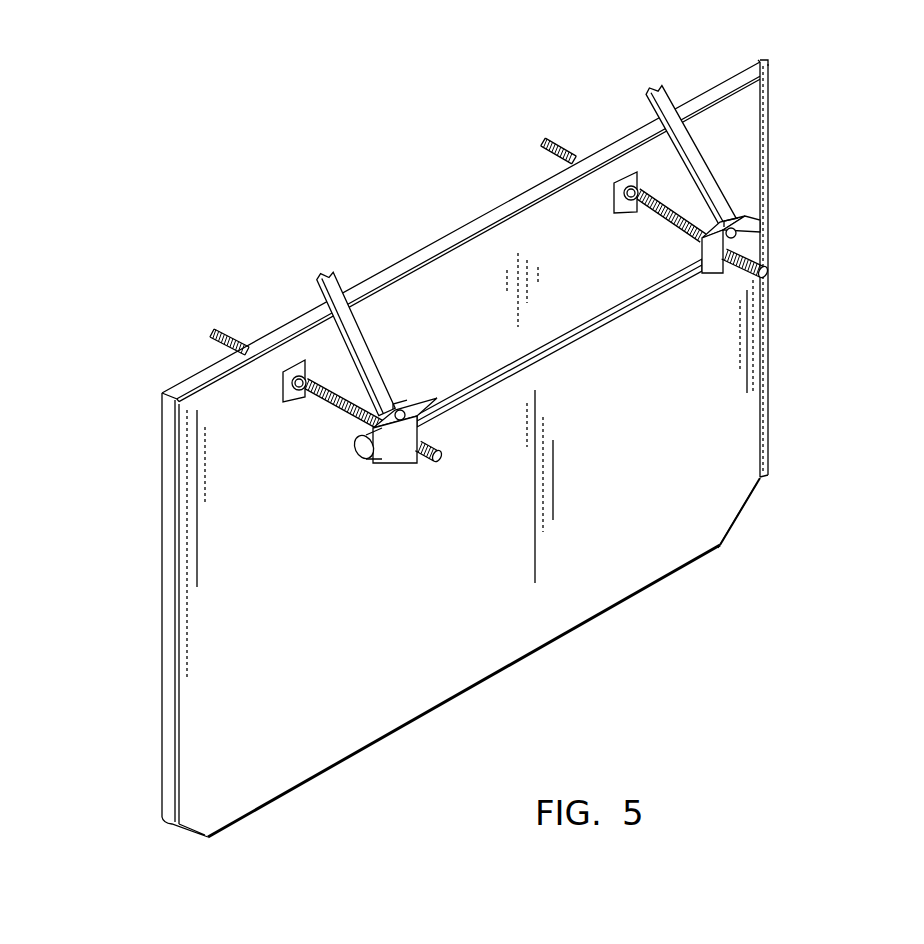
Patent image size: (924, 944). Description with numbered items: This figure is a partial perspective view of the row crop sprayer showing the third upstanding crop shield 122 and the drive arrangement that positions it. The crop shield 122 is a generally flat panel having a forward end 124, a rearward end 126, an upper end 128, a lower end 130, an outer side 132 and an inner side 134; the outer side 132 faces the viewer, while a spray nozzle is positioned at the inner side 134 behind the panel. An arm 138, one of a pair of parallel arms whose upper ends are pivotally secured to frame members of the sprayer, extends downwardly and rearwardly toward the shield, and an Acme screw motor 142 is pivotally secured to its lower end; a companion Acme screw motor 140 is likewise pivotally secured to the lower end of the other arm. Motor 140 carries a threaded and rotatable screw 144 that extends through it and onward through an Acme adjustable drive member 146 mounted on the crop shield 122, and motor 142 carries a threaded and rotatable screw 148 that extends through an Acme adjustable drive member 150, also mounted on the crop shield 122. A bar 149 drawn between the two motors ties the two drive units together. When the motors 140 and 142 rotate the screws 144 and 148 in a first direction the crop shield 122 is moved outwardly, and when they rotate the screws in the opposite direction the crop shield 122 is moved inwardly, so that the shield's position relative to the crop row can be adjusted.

The third upstanding crop shield 122 is at (437, 218).
The forward end 124 is at (177, 670).
The rearward end 126 is at (770, 348).
The upper end 128 is at (372, 282).
The lower end 130 is at (465, 690).
The outer side 132 is at (500, 563).
The inner side 134 is at (150, 562).
The arm 138 is at (692, 163).
The Acme screw motor 140 is at (372, 468).
The Acme screw motor 142 is at (768, 222).
The screw 144 is at (333, 400).
The Acme adjustable drive member 146 is at (283, 392).
The screw 148 is at (616, 224).
The connecting bar 149 is at (632, 322).
The Acme adjustable drive member 150 is at (620, 177).